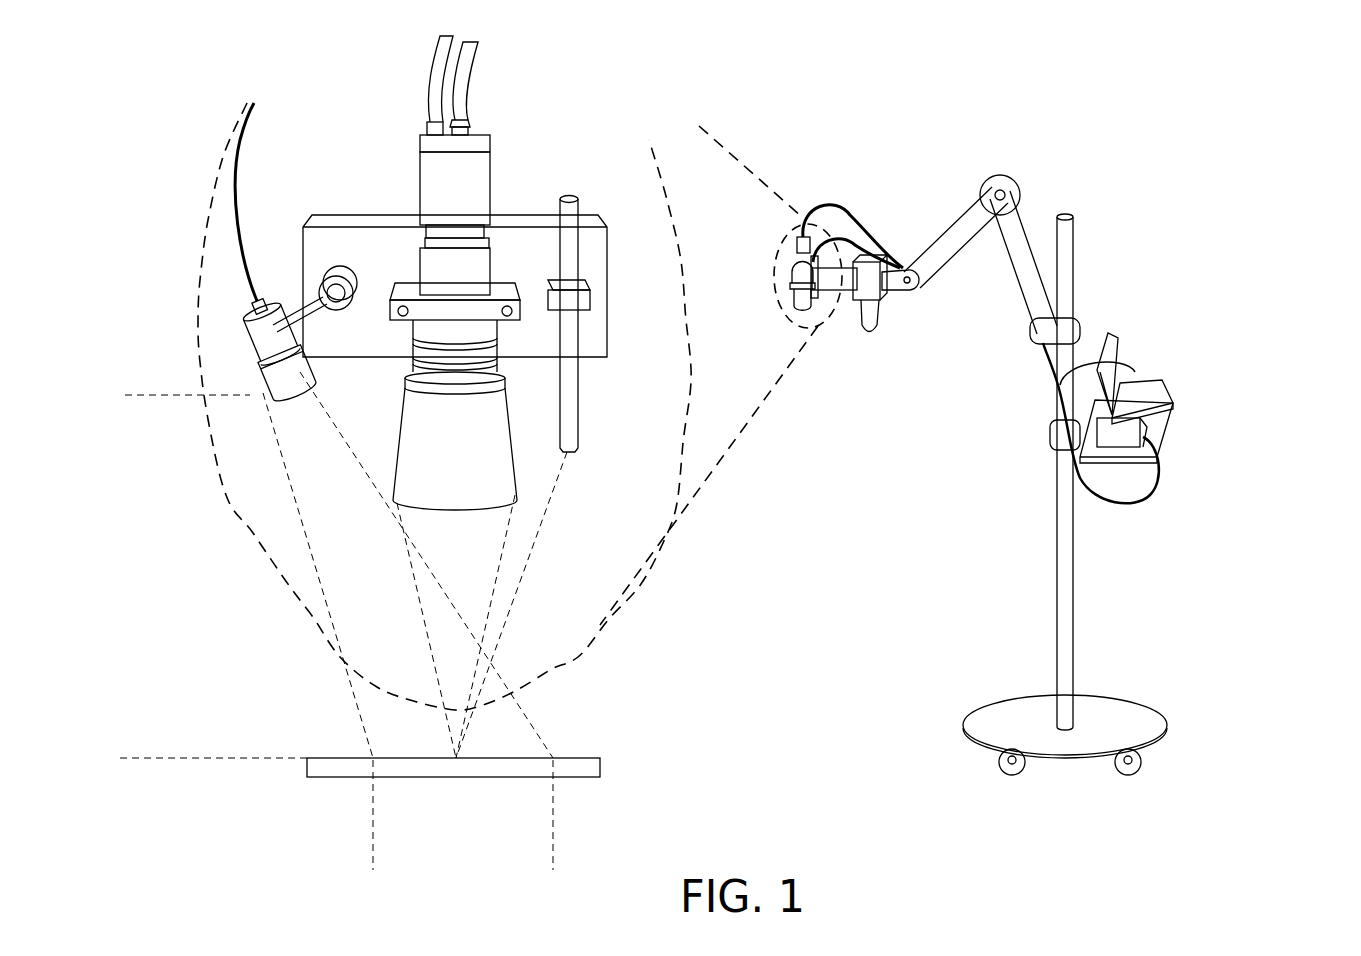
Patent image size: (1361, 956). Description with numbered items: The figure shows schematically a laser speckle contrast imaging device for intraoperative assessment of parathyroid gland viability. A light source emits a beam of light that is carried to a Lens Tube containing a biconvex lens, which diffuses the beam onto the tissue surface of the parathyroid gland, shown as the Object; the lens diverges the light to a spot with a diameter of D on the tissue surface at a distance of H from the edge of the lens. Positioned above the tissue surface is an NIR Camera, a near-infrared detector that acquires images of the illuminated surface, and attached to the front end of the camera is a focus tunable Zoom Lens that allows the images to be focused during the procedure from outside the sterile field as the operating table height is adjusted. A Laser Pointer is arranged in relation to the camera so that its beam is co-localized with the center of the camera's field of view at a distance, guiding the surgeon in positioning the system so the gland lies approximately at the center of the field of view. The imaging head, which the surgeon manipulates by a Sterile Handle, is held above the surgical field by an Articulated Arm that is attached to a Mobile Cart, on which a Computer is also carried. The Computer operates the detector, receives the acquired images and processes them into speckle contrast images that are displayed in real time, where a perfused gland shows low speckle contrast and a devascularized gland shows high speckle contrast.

The lens tube Lens Tube is at (230, 352).
The NIR camera NIR Camera is at (486, 160).
The laser pointer Laser Pointer is at (595, 249).
The zoom lens Zoom Lens is at (532, 471).
The object Object is at (501, 770).
The distance H is at (140, 405).
The diameter D is at (546, 815).
The articulated arm Articulated Arm is at (998, 225).
The sterile handle Sterile Handle is at (892, 346).
The computer Computer is at (1172, 377).
The mobile cart Mobile Cart is at (1104, 494).